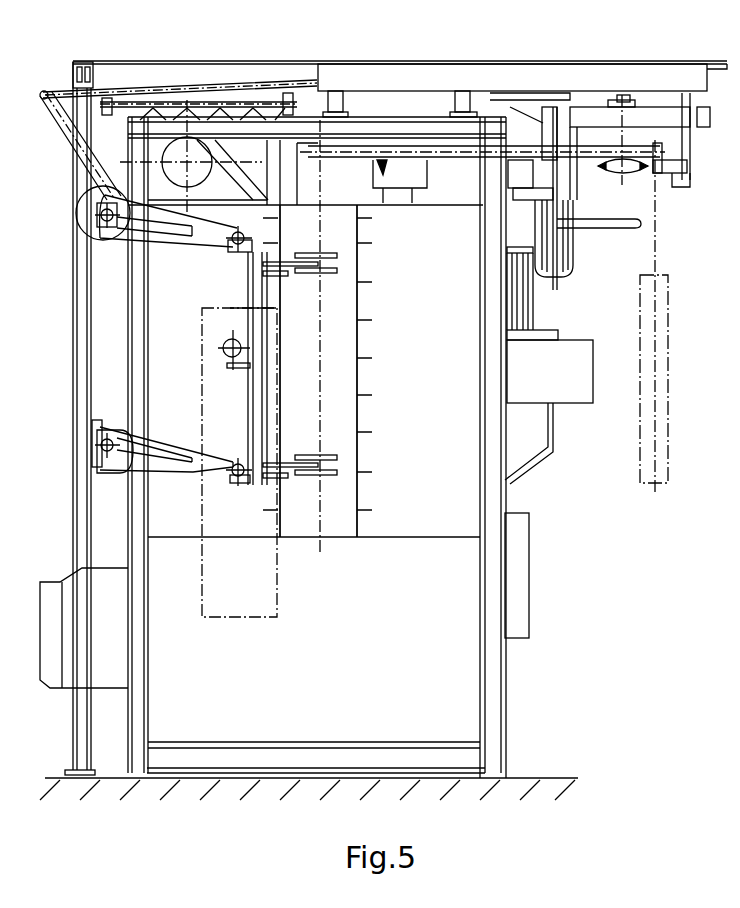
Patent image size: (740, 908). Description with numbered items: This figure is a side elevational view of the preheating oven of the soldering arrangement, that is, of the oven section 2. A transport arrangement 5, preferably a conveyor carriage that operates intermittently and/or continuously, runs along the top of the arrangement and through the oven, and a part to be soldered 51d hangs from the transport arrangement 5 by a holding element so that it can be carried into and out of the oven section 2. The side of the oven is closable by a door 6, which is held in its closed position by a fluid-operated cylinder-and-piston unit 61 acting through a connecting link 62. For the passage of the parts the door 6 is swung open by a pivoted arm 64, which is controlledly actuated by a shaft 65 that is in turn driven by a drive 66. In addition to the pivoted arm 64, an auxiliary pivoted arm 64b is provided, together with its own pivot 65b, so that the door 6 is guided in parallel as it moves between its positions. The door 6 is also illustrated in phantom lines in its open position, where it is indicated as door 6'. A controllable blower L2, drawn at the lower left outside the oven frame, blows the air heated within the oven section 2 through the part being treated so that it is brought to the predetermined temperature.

The oven section 2 is at (438, 397).
The transport arrangement 5 is at (598, 147).
The door 6 is at (345, 371).
The door in open position 6' is at (268, 463).
The part to be soldered 51d is at (647, 444).
The fluid-operated cylinder-and-piston unit 61 is at (230, 340).
The connecting link 62 is at (245, 368).
The pivoted arm 64 is at (100, 248).
The auxiliary pivoted arm 64b is at (130, 468).
The shaft 65 is at (100, 212).
The lower pivot pin 65b is at (100, 442).
The drive 66 is at (562, 253).
The controllable blower L2 is at (73, 668).